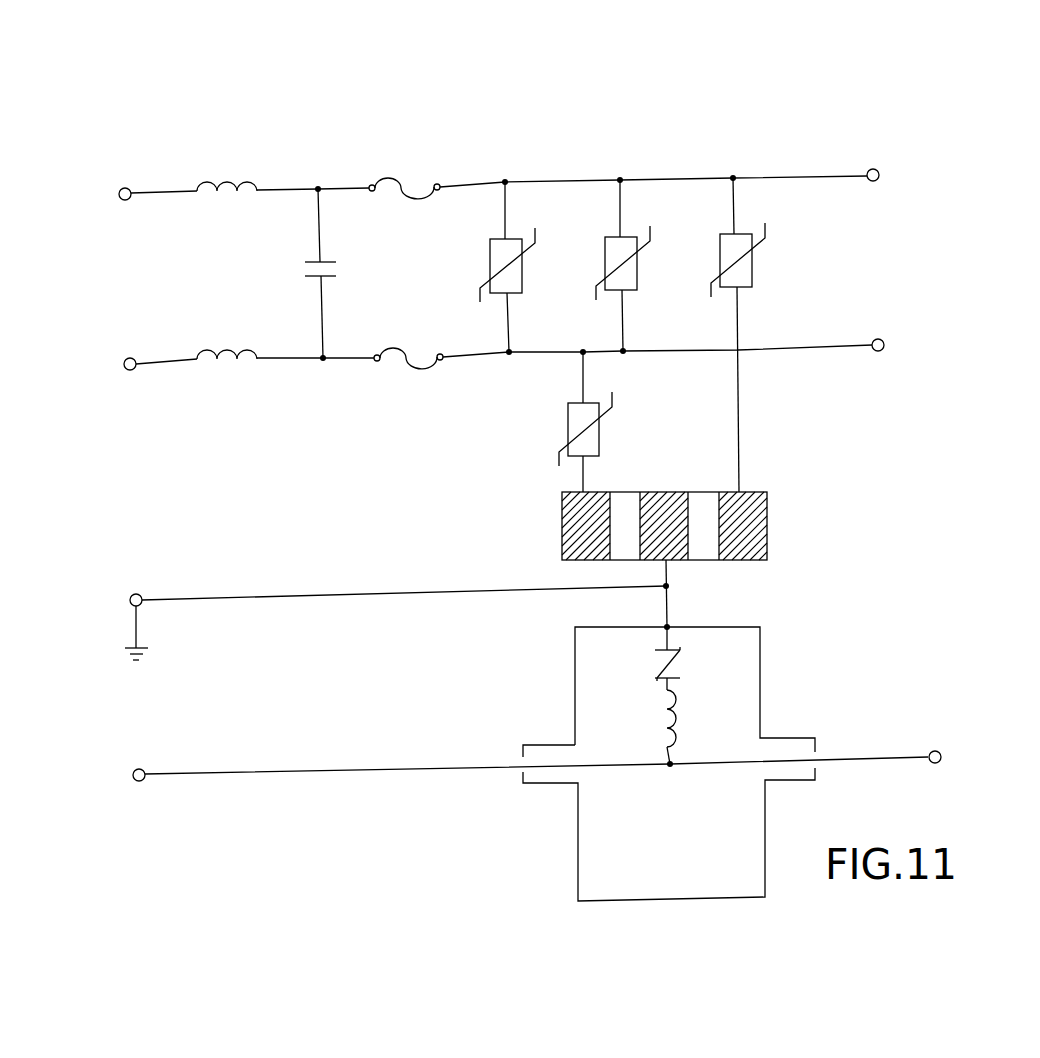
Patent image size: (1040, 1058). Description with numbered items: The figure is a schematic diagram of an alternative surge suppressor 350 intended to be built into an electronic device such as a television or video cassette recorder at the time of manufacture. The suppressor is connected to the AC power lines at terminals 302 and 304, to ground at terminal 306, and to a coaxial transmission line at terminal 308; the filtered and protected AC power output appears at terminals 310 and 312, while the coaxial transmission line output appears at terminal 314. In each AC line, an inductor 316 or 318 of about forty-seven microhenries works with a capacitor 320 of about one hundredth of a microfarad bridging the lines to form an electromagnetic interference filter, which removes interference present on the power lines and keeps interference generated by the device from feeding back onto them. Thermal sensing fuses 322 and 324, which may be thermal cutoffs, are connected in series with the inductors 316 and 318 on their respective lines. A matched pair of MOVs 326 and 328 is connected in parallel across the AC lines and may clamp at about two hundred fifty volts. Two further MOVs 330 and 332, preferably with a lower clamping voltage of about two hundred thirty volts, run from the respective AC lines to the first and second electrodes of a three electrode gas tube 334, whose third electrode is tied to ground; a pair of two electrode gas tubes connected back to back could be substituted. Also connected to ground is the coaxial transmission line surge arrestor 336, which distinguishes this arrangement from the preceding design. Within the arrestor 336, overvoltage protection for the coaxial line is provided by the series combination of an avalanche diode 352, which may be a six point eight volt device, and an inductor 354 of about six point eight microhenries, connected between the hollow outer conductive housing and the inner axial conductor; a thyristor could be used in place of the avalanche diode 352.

The AC power line connection 302 is at (108, 192).
The AC power line connection 304 is at (112, 358).
The ground connection 306 is at (118, 592).
The coaxial transmission line connection 308 is at (120, 770).
The AC power output 310 is at (898, 170).
The AC power output 312 is at (895, 340).
The coaxial transmission line output 314 is at (945, 732).
The inductor 316 is at (237, 174).
The inductor 318 is at (227, 347).
The capacitor 320 is at (345, 268).
The thermal sensing fuse 322 is at (417, 177).
The thermal sensing fuse 324 is at (417, 338).
The MOV 326 is at (532, 277).
The MOV 328 is at (648, 273).
The MOV 330 is at (763, 273).
The MOV 332 is at (617, 447).
The three electrode gas tube 334 is at (777, 505).
The coaxial transmission line surge arrestor 336 is at (777, 628).
The surge suppressor 350 is at (722, 154).
The avalanche diode 352 is at (642, 660).
The inductor 354 is at (650, 718).